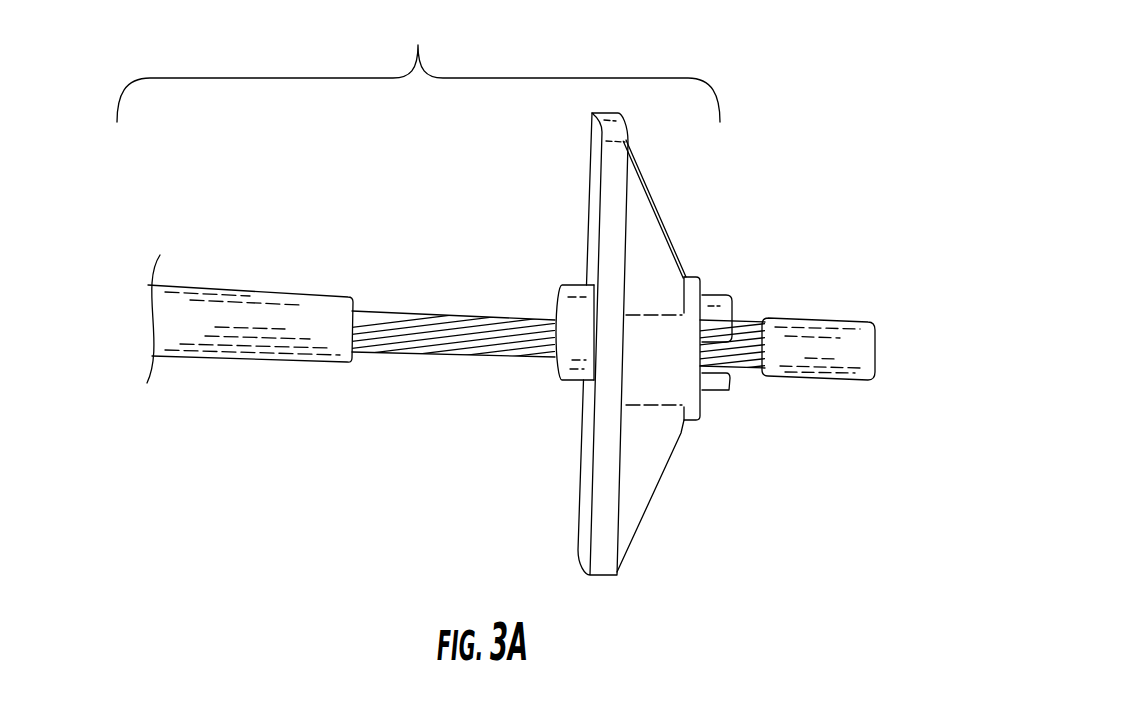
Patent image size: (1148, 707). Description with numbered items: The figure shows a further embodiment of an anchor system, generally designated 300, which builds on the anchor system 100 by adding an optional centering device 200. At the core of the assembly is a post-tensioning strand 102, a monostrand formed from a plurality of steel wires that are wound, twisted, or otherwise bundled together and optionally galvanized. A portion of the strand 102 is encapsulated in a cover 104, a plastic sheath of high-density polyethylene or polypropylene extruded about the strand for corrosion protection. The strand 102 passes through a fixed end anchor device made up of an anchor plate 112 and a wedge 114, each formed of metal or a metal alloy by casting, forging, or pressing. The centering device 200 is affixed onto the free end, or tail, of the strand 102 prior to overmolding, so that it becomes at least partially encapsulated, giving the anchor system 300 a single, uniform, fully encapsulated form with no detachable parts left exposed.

The anchor system 100 is at (418, 66).
The anchor system 300 is at (245, 205).
The cover 104 is at (250, 351).
The post-tensioning strand 102 is at (400, 340).
The anchor plate 112 is at (632, 512).
The wedge 114 is at (712, 380).
The centering device 200 is at (853, 395).